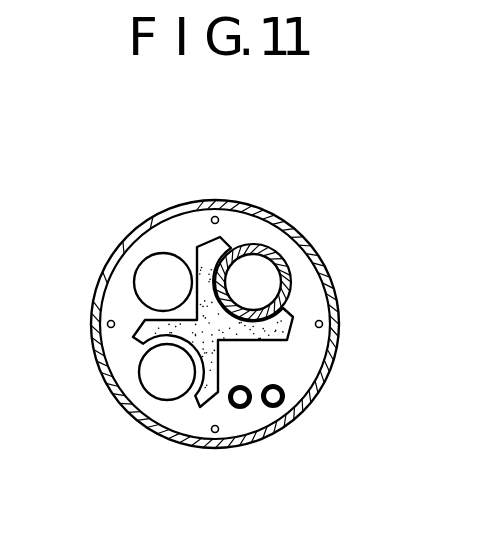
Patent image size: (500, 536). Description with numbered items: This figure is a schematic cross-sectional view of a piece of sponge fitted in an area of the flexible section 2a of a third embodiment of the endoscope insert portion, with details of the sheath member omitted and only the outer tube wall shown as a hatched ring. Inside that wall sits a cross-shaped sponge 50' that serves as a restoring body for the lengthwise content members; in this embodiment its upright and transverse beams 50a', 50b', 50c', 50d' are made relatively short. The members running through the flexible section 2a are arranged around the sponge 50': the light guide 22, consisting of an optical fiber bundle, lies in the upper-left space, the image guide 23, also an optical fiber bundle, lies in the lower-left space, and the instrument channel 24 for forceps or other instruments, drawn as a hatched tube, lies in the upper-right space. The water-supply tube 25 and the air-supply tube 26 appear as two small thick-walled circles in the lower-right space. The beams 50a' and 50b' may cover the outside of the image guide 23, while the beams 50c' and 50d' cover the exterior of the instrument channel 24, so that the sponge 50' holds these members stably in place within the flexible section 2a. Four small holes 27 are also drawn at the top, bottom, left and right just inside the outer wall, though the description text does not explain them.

The flexible section 2a is at (327, 257).
The light guide 22 is at (147, 268).
The image guide 23 is at (147, 383).
The instrument channel 24 is at (282, 256).
The water-supply tube 25 is at (249, 406).
The air-supply tube 26 is at (285, 399).
The wire guide holes 27 is at (214, 216).
The cross-shaped sponge 50' is at (221, 262).
The beam 50a' is at (160, 223).
The beam 50b' is at (315, 346).
The beam 50c' is at (235, 427).
The beam 50d' is at (106, 301).